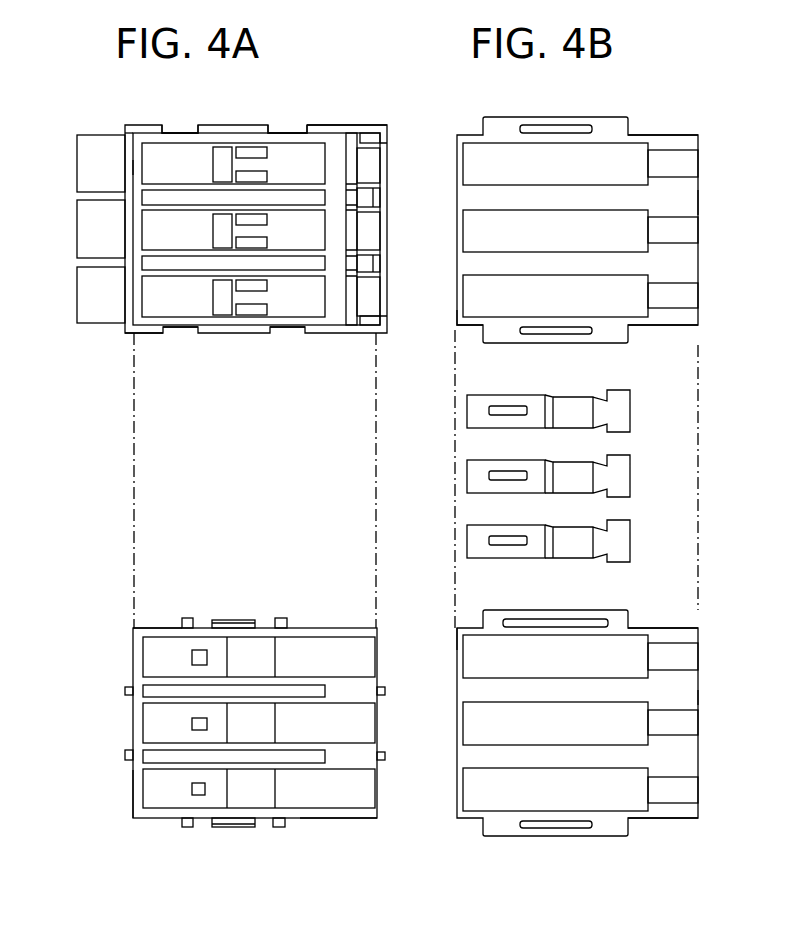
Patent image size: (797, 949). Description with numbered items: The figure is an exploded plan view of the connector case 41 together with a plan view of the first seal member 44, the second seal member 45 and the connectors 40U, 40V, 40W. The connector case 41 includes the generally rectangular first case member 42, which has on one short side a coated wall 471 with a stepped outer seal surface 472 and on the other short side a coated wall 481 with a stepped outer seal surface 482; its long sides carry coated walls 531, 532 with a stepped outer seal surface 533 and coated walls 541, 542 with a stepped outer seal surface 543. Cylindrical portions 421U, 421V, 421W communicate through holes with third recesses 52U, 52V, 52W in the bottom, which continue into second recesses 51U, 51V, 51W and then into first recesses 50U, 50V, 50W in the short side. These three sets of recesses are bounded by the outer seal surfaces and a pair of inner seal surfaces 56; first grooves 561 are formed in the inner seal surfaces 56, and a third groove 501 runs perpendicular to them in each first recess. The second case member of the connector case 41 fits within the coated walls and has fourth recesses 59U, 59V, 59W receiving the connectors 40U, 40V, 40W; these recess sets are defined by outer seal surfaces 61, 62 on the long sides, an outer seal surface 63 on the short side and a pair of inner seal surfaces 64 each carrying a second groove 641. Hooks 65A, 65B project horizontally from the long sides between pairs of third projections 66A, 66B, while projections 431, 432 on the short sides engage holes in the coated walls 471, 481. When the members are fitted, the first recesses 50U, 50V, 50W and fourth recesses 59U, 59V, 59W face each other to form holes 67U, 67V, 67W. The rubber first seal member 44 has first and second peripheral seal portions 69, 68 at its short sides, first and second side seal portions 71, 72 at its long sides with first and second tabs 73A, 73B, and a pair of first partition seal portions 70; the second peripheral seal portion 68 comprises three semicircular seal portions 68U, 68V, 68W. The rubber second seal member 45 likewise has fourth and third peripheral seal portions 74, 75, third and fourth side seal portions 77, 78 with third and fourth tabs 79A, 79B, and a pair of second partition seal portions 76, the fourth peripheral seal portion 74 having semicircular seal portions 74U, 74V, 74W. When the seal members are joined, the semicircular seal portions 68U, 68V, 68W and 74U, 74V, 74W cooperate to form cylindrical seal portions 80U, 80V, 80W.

In FIG. 4A, the connector case 41 is at (319, 114).
In FIG. 4A, the first case member 42 is at (320, 843).
In FIG. 4B, the first seal member 44 is at (679, 116).
In FIG. 4B, the second seal member 45 is at (638, 850).
In FIG. 4A, the coated wall 471 is at (130, 152).
In FIG. 4A, the stepped outer seal surface 472 is at (138, 165).
In FIG. 4A, the coated wall 541 is at (150, 128).
In FIG. 4A, the coated wall 542 is at (330, 130).
In FIG. 4A, the stepped outer seal surface 543 is at (295, 134).
In FIG. 4A, the coated wall 531 is at (150, 333).
In FIG. 4A, the coated wall 532 is at (318, 330).
In FIG. 4A, the stepped outer seal surface 533 is at (150, 334).
In FIG. 4A, the third recess 52W is at (185, 153).
In FIG. 4A, the third recess 52V is at (203, 243).
In FIG. 4A, the third recess 52U is at (180, 308).
In FIG. 4A, the second recess 51W is at (280, 157).
In FIG. 4A, the second recess 51V is at (305, 245).
In FIG. 4A, the second recess 51U is at (285, 300).
In FIG. 4A, the inner seal surface 56 is at (270, 188).
In FIG. 4A, the first groove 561 is at (193, 196).
In FIG. 4A, the third groove 501 is at (354, 326).
In FIG. 4A, the first recess 50W is at (378, 158).
In FIG. 4A, the first recess 50V is at (378, 232).
In FIG. 4A, the first recess 50U is at (378, 310).
In FIG. 4A, the hole 67W is at (297, 477).
In FIG. 4A, the hole 67V is at (294, 477).
In FIG. 4A, the hole 67U is at (294, 478).
In FIG. 4A, the coated wall 481 is at (380, 137).
In FIG. 4A, the stepped outer seal surface 482 is at (370, 137).
In FIG. 4A, the cylindrical portion 421W is at (88, 177).
In FIG. 4A, the cylindrical portion 421V is at (88, 244).
In FIG. 4A, the cylindrical portion 421U is at (88, 311).
In FIG. 4A, the outer seal surface 61 is at (157, 628).
In FIG. 4A, the outer seal surface 62 is at (358, 818).
In FIG. 4A, the outer seal surface 63 is at (140, 786).
In FIG. 4A, the inner seal surface 64 is at (342, 686).
In FIG. 4A, the second groove 641 is at (180, 725).
In FIG. 4A, the hook 65A is at (240, 618).
In FIG. 4A, the hook 65B is at (235, 828).
In FIG. 4A, the third projection 66A is at (188, 618).
In FIG. 4A, the third projection 66B is at (188, 828).
In FIG. 4A, the projection 431 is at (125, 691).
In FIG. 4A, the projection 432 is at (387, 692).
In FIG. 4A, the fourth recess 59W is at (362, 775).
In FIG. 4A, the fourth recess 59V is at (362, 710).
In FIG. 4A, the fourth recess 59U is at (362, 645).
In FIG. 4B, the second side seal portion 72 is at (637, 137).
In FIG. 4B, the second tab 73B is at (550, 122).
In FIG. 4B, the first tab 73A is at (545, 342).
In FIG. 4B, the first side seal portion 71 is at (638, 325).
In FIG. 4B, the first peripheral seal portion 69 is at (457, 320).
In FIG. 4B, the first partition seal portion 70 is at (518, 203).
In FIG. 4B, the second peripheral seal portion 68 is at (698, 203).
In FIG. 4B, the semicircular seal portion 68W is at (688, 161).
In FIG. 4B, the semicircular seal portion 68V is at (688, 229).
In FIG. 4B, the semicircular seal portion 68U is at (688, 296).
In FIG. 4B, the cylindrical seal portion 80W is at (707, 486).
In FIG. 4B, the cylindrical seal portion 80V is at (704, 487).
In FIG. 4B, the cylindrical seal portion 80U is at (704, 488).
In FIG. 4B, the connector 40W is at (470, 412).
In FIG. 4B, the connector 40V is at (470, 477).
In FIG. 4B, the connector 40U is at (470, 542).
In FIG. 4B, the third peripheral seal portion 75 is at (456, 624).
In FIG. 4B, the third side seal portion 77 is at (636, 628).
In FIG. 4B, the fourth side seal portion 78 is at (642, 818).
In FIG. 4B, the third tab 79A is at (555, 613).
In FIG. 4B, the fourth tab 79B is at (555, 836).
In FIG. 4B, the second partition seal portion 76 is at (531, 697).
In FIG. 4B, the fourth peripheral seal portion 74 is at (698, 698).
In FIG. 4B, the semicircular seal portion 74W is at (688, 789).
In FIG. 4B, the semicircular seal portion 74V is at (688, 722).
In FIG. 4B, the semicircular seal portion 74U is at (688, 657).